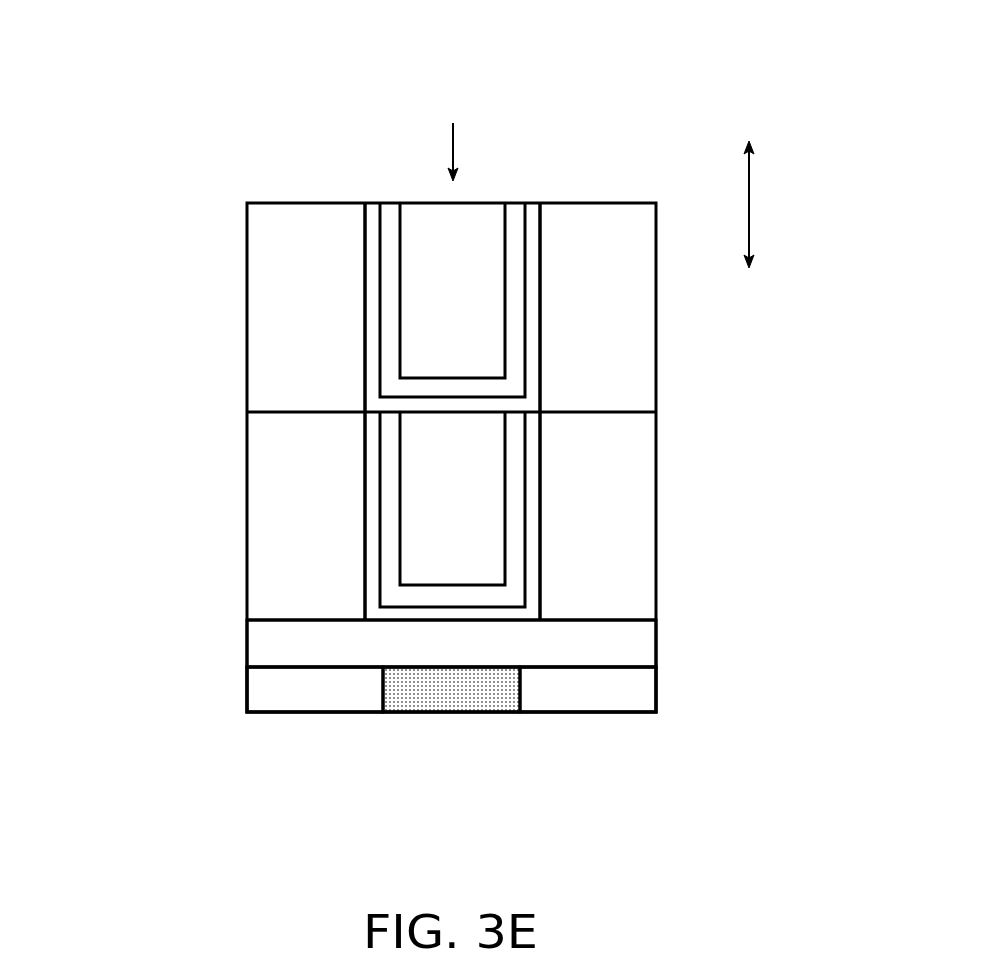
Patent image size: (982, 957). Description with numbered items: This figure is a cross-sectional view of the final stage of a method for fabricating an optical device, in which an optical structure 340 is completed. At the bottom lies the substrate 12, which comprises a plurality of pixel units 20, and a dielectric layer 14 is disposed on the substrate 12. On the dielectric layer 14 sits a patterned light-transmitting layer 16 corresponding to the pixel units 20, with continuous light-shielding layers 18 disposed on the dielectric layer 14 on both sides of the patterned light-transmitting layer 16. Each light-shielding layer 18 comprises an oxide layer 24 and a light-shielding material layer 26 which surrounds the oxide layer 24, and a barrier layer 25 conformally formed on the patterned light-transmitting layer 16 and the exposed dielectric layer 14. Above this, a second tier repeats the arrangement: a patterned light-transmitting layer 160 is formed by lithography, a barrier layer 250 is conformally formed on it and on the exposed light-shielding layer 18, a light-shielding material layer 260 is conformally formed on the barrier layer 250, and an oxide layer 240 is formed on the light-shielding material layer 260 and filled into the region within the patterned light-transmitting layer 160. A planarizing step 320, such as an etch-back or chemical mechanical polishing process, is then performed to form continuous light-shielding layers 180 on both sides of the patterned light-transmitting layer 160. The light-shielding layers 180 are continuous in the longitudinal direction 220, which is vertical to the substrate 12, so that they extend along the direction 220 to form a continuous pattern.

The optical structure 340 is at (222, 153).
The planarizing step 320 is at (453, 150).
The direction 220 is at (749, 203).
The continuous light-shielding layer 180 is at (308, 307).
The oxide layer 240 is at (422, 249).
The light-shielding material layer 260 is at (389, 284).
The barrier layer 250 is at (370, 319).
The patterned light-transmitting layer 160 is at (260, 372).
The continuous light-shielding layer 18 is at (326, 516).
The oxide layer 24 is at (422, 457).
The light-shielding material layer 26 is at (389, 492).
The barrier layer 25 is at (370, 527).
The patterned light-transmitting layer 16 is at (260, 580).
The dielectric layer 14 is at (645, 643).
The substrate 12 is at (657, 688).
The pixel unit 20 is at (333, 705).